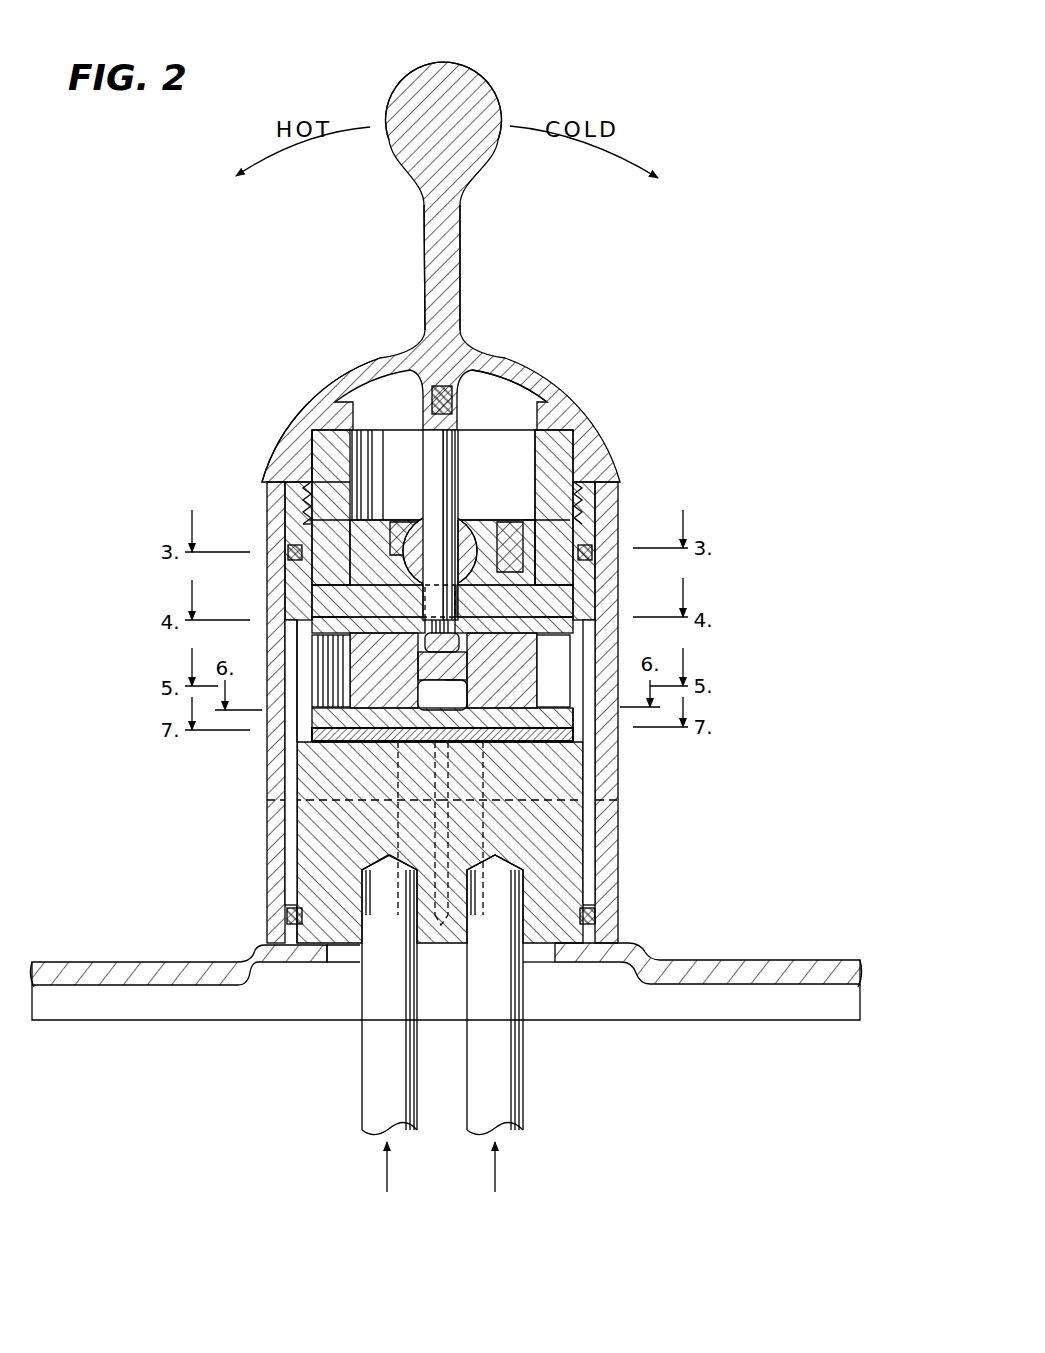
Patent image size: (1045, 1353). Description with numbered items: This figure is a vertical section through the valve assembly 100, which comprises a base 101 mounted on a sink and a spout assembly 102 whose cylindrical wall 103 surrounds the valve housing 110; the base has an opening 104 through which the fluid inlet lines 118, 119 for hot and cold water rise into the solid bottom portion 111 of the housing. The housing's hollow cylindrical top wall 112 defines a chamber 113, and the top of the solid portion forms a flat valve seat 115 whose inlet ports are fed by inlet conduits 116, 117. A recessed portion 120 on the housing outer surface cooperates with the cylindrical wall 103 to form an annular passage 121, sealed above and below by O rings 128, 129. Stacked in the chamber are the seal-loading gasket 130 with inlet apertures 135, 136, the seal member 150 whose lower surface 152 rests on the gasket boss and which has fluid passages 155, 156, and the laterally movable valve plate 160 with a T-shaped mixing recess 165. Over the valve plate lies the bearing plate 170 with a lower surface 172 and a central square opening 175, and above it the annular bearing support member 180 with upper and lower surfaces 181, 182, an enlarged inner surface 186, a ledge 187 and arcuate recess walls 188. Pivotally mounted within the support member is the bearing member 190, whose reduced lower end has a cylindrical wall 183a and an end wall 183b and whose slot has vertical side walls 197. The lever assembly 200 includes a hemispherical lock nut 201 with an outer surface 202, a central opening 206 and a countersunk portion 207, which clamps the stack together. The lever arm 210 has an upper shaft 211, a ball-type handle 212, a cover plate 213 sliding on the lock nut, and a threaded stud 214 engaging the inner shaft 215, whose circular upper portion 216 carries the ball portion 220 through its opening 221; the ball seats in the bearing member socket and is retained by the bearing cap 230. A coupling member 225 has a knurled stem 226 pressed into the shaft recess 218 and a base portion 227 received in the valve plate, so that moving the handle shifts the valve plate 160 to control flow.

The valve assembly 100 is at (598, 42).
The base or pedestal 101 is at (822, 958).
The spout assembly 102 is at (622, 836).
The cylindrical wall 103 is at (270, 912).
The opening 104 is at (345, 966).
The valve housing 110 is at (332, 832).
The solid bottom portion 111 is at (315, 856).
The hollow cylindrical top wall 112 is at (300, 590).
The chamber 113 is at (570, 665).
The valve seat 115 is at (580, 732).
The inlet conduit 116 is at (262, 800).
The inlet conduit 117 is at (622, 800).
The fluid inlet line 118 is at (360, 1102).
The fluid inlet line 119 is at (525, 1102).
The recessed portion 120 is at (290, 887).
The annular passage 121 is at (294, 868).
The O ring 128 is at (292, 922).
The O ring 129 is at (300, 547).
The seal-loading gasket 130 is at (350, 742).
The inlet aperture 135 is at (395, 750).
The inlet aperture 136 is at (485, 752).
The seal member 150 is at (330, 716).
The lower surface 152 is at (580, 748).
The fluid passage 155 is at (420, 707).
The fluid passage 156 is at (490, 707).
The valve plate 160 is at (360, 665).
The recess 165 is at (452, 695).
The bearing plate 170 is at (567, 611).
The lower surface 172 is at (547, 625).
The opening 175 is at (385, 655).
The bearing support member 180 is at (562, 590).
The upper surface 181 is at (385, 513).
The lower surface 182 is at (340, 628).
The reduced diameter cylindrical wall 183a is at (330, 592).
The annular end wall 183b is at (318, 572).
The enlarged-diameter cylindrical surface 186 is at (524, 540).
The ledge 187 is at (530, 575).
The arcuate recess walls 188 is at (456, 608).
The bearing member 190 is at (590, 540).
The side walls 197 is at (440, 551).
The lever assembly 200 is at (538, 328).
The lock nut 201 is at (578, 456).
The hemispherical outer surface 202 is at (292, 434).
The cylindrical opening 206 is at (535, 453).
The countersunk portion 207 is at (556, 416).
The lever arm 210 is at (420, 244).
The upper shaft 211 is at (463, 276).
The ball-type handle 212 is at (480, 94).
The hemispherical cover plate 213 is at (332, 378).
The externally threaded stud 214 is at (430, 392).
The inner shaft 215 is at (421, 456).
The upper portion 216 is at (440, 492).
The recess 218 is at (425, 608).
The ball portion 220 is at (410, 530).
The cylindrical opening 221 is at (474, 522).
The coupling member 225 is at (452, 640).
The stem 226 is at (457, 625).
The base portion 227 is at (420, 668).
The bearing cap 230 is at (340, 488).